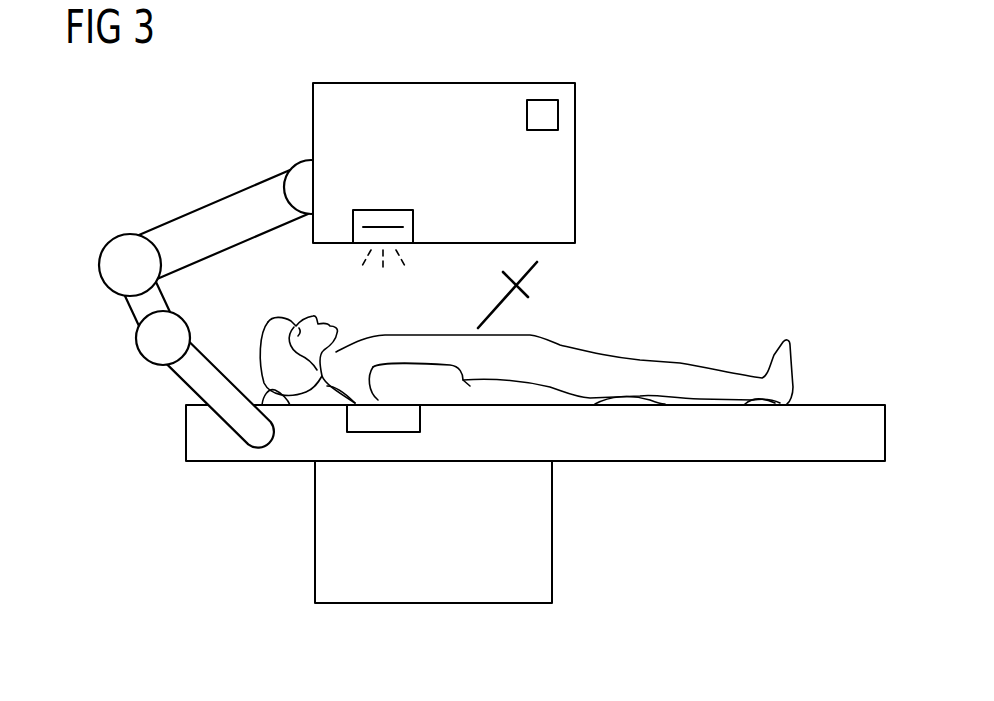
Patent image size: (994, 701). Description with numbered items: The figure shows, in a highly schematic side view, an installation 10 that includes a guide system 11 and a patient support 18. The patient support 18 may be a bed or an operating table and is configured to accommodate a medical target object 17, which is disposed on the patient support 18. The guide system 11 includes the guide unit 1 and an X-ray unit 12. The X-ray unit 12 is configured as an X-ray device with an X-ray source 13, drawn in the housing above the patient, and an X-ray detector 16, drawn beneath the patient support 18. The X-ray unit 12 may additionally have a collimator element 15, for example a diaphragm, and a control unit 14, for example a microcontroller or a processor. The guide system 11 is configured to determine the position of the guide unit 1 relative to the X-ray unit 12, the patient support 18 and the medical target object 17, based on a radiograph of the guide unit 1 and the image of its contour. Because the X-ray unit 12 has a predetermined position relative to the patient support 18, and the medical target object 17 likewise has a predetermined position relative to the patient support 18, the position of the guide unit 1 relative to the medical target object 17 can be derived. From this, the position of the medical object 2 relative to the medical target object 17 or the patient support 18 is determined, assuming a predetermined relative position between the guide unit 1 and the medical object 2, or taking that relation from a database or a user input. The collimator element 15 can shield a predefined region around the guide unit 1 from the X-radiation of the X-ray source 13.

The guide unit 1 is at (536, 285).
The medical object 2 is at (503, 293).
The installation 10 is at (194, 574).
The guide system 11 is at (583, 70).
The X-ray unit 12 is at (445, 83).
The X-ray source 13 is at (413, 225).
The control unit 14 is at (558, 115).
The collimator element 15 is at (385, 227).
The X-ray detector 16 is at (382, 422).
The medical target object 17 is at (617, 360).
The patient support 18 is at (552, 523).